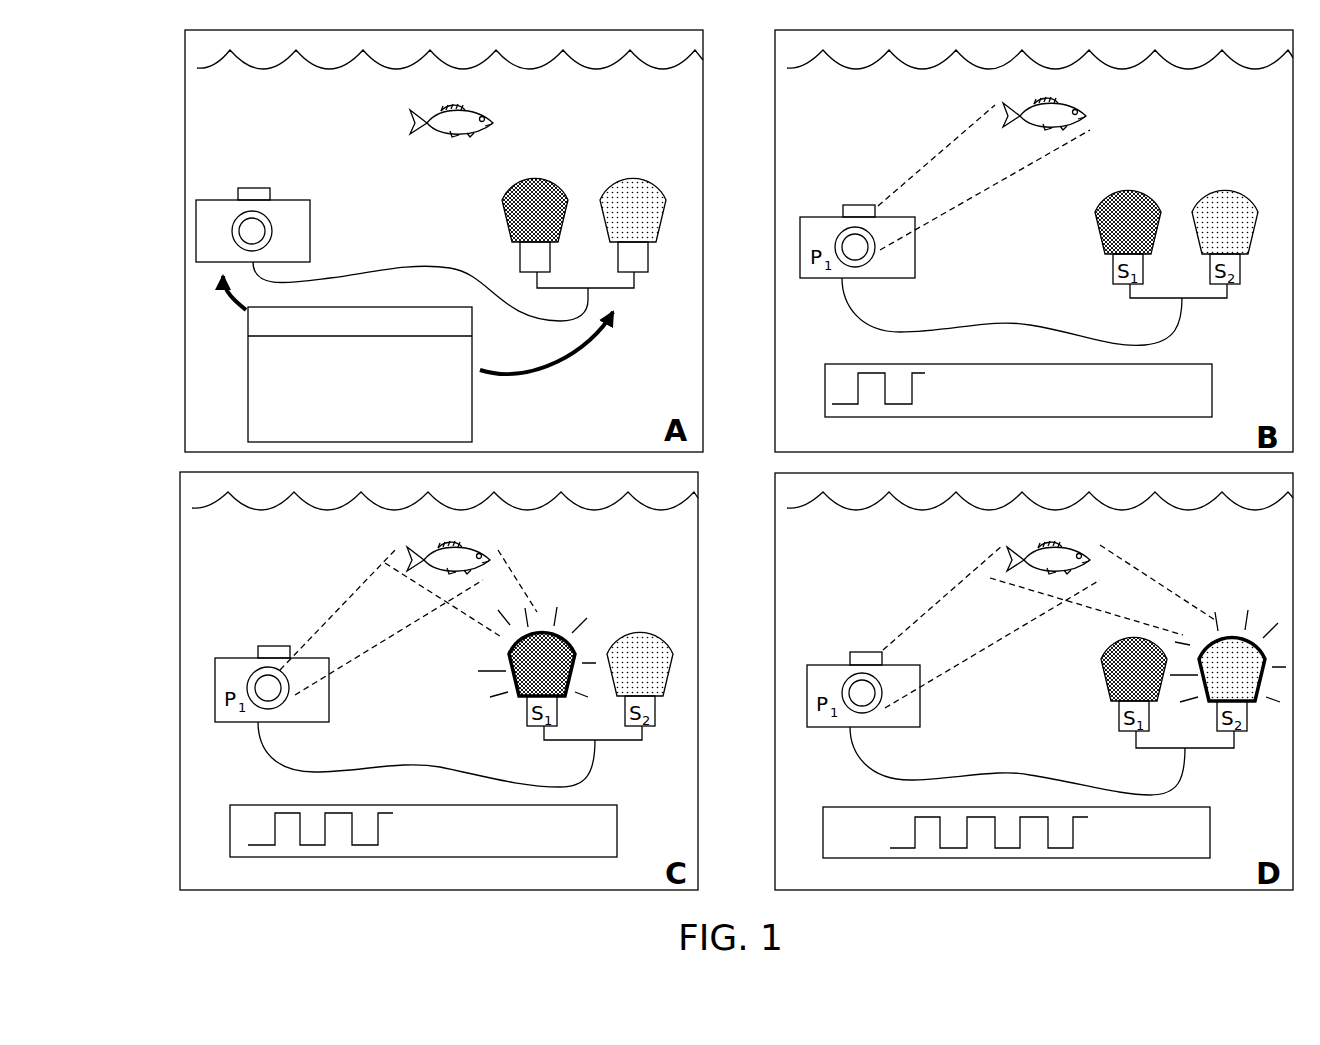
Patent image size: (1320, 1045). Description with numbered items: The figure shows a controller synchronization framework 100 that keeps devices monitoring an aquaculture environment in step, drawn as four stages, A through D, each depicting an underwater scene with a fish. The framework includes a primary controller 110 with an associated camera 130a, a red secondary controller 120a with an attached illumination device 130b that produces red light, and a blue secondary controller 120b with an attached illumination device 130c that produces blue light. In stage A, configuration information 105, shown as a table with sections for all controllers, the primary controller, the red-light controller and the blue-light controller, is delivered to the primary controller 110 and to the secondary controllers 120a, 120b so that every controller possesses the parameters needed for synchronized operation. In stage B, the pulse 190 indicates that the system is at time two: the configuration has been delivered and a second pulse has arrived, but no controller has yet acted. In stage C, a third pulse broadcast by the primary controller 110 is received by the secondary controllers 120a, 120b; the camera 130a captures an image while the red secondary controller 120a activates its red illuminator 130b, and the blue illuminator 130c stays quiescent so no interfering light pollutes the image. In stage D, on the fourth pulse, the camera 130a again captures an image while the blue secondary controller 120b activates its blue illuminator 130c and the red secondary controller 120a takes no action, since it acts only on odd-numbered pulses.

The controller synchronization framework 100 is at (157, 101).
The primary controller 110 is at (194, 242).
The camera 130a is at (291, 200).
The red illumination device 130b is at (533, 179).
The blue illumination device 130c is at (634, 179).
The red secondary controller 120a is at (518, 262).
The blue secondary controller 120b is at (648, 271).
The configuration information 105 is at (244, 384).
The pulse 190 is at (848, 366).